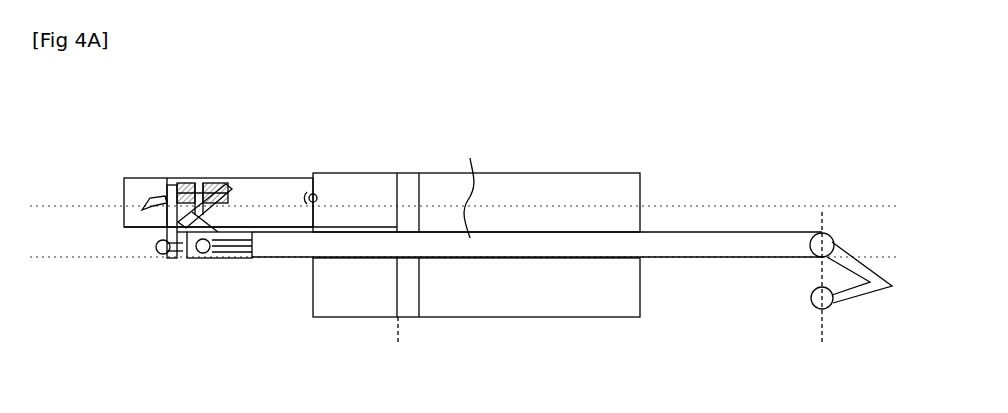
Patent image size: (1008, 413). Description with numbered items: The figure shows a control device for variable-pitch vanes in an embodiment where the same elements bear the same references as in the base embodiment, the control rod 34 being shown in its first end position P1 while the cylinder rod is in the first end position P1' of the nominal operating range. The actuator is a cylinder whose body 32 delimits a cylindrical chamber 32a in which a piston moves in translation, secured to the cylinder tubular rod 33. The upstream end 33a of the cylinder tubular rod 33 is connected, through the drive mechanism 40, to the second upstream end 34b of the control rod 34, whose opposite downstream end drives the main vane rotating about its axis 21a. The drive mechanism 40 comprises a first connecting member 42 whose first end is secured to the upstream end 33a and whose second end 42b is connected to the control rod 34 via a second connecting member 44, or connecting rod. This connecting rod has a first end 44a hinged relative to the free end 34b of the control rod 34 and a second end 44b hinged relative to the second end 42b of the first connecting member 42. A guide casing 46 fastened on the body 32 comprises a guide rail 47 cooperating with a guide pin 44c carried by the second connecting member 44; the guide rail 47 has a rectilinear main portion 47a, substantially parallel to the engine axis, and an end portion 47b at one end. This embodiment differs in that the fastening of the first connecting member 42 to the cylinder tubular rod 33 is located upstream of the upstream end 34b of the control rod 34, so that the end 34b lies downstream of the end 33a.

The axis of the main vane 21a is at (830, 308).
The body 32 is at (549, 175).
The cylindrical chamber 32a is at (404, 174).
The cylinder tubular rod 33 is at (470, 189).
The control rod 34 is at (712, 237).
The second upstream end of the control rod 34b is at (207, 259).
The drive mechanism 40 is at (128, 257).
The first connecting member 42 is at (166, 234).
The second end of the first connecting member 42b is at (232, 184).
The second connecting member 44 is at (229, 259).
The first end of the second connecting member 44a is at (191, 257).
The second end of the second connecting member 44b is at (212, 181).
The guide pin 44c is at (190, 181).
The guide casing 46 is at (292, 177).
The guide rail 47 is at (150, 196).
The rectilinear main portion 47a is at (174, 188).
The end portion 47b is at (140, 201).
The upstream end of the cylinder tubular rod 33a is at (158, 258).
The first end position of the control rod P1 is at (822, 271).
The first end position of the cylinder rod P1' is at (411, 331).